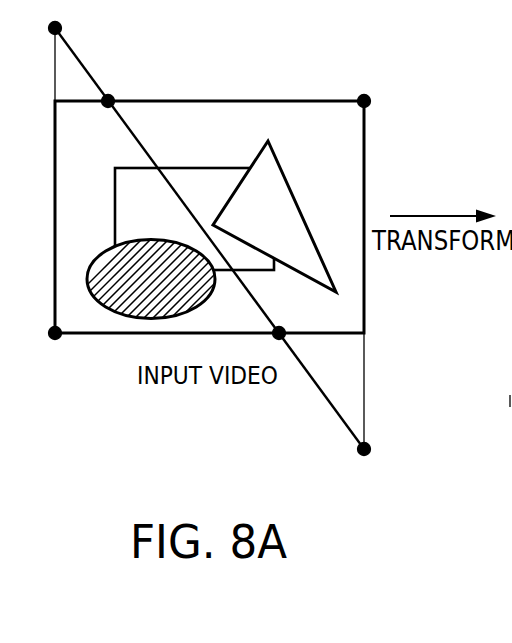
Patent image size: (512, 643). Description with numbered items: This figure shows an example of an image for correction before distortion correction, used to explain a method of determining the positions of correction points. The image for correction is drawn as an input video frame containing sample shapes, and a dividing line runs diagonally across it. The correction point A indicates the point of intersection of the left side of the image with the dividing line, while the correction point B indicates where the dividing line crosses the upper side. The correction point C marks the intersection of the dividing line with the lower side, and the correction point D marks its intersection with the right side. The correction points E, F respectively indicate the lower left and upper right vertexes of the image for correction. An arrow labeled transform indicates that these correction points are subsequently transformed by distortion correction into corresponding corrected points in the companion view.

The correction point A is at (69, 24).
The correction point B is at (117, 86).
The correction point C is at (288, 319).
The correction point D is at (380, 448).
The correction point E is at (56, 353).
The correction point F is at (370, 85).